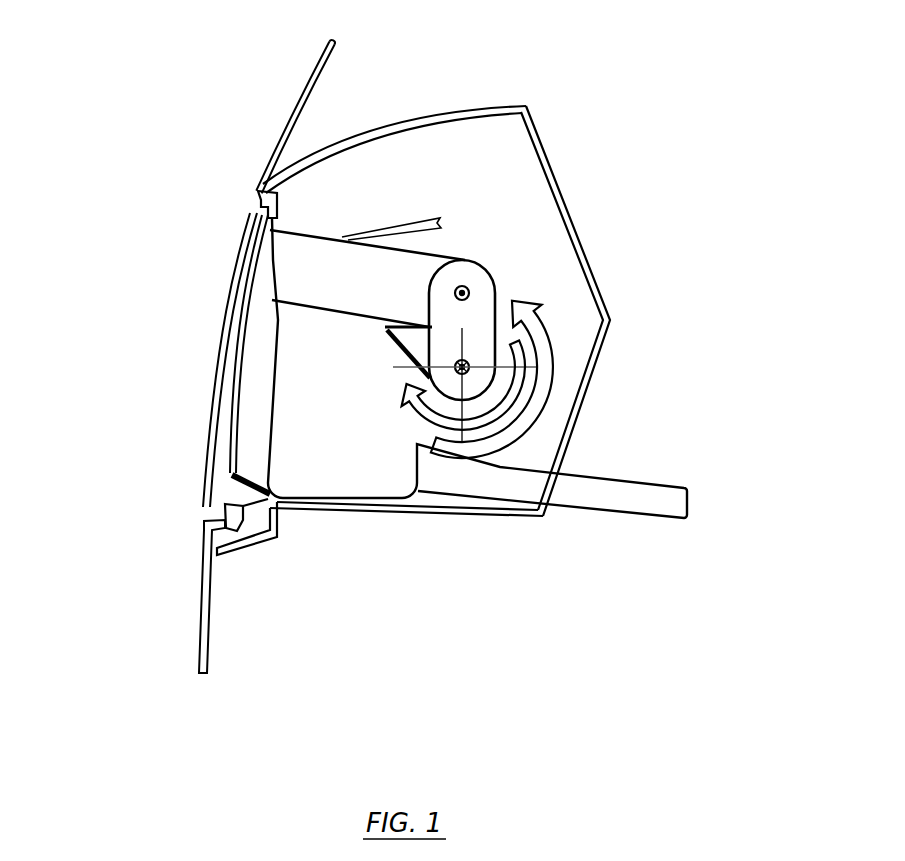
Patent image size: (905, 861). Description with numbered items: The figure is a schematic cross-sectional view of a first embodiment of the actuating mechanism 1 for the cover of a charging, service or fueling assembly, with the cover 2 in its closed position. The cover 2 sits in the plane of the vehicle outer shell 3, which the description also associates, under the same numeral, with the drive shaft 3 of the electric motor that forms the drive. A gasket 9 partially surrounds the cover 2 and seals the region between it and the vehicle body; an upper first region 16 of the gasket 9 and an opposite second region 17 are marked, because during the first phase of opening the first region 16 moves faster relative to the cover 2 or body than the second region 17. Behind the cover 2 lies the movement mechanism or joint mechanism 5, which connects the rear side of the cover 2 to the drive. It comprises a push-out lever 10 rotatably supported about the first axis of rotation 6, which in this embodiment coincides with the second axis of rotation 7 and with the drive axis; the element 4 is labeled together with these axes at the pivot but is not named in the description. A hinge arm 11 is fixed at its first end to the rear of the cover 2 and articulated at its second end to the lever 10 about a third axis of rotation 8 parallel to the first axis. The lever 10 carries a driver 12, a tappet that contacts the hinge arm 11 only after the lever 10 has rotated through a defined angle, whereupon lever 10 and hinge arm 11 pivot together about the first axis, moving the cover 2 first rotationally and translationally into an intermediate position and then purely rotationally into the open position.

The actuating mechanism 1 is at (423, 340).
The cover 2 is at (213, 373).
The vehicle outer shell 3 is at (305, 78).
The spring element 4 is at (603, 361).
The movement mechanism or joint mechanism 5 is at (574, 366).
The first axis of rotation 6 is at (603, 354).
The second axis of rotation 7 is at (468, 365).
The third axis of rotation 8 is at (467, 290).
The gasket 9 is at (155, 339).
The lever 10 is at (480, 337).
The hinge arm 11 is at (383, 266).
The driver 12 is at (408, 342).
The first region of the gasket 16 is at (180, 183).
The second region of the gasket 17 is at (222, 514).